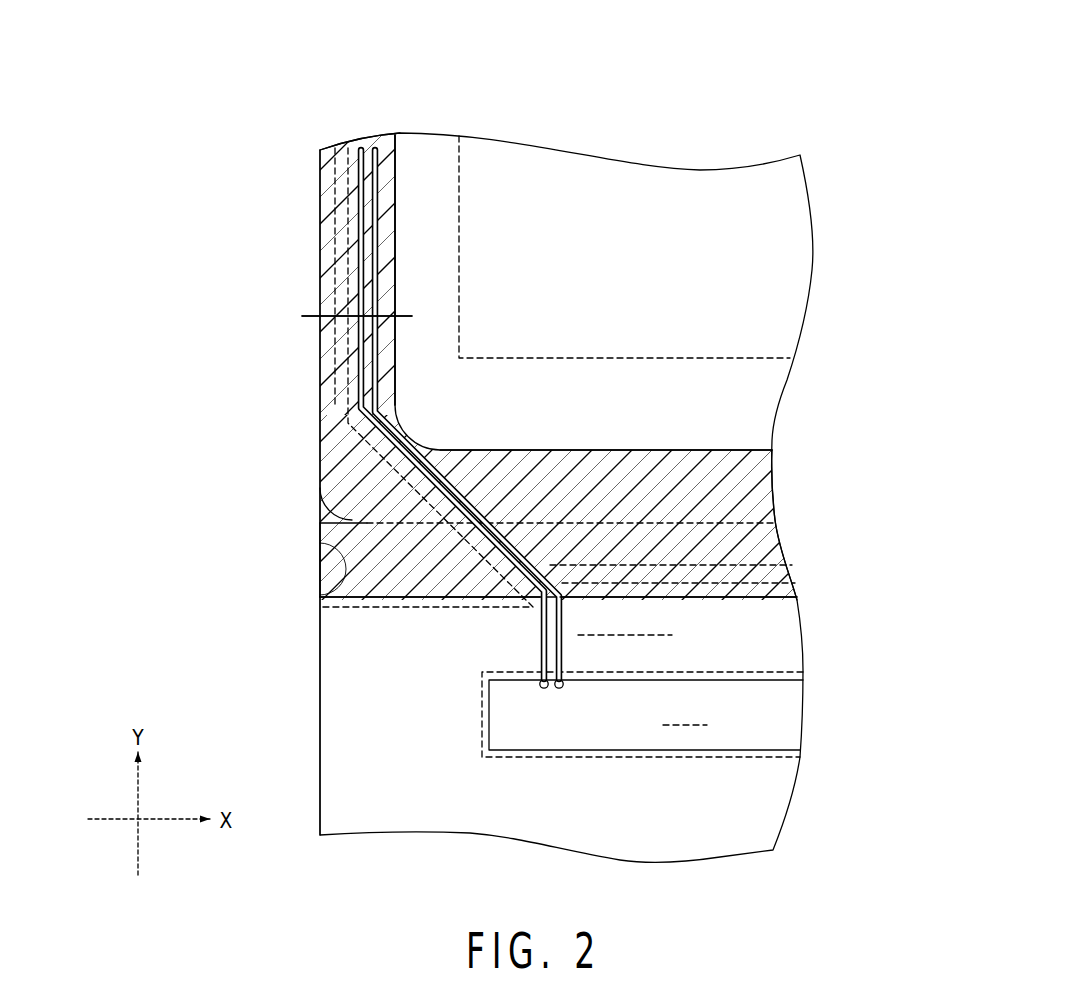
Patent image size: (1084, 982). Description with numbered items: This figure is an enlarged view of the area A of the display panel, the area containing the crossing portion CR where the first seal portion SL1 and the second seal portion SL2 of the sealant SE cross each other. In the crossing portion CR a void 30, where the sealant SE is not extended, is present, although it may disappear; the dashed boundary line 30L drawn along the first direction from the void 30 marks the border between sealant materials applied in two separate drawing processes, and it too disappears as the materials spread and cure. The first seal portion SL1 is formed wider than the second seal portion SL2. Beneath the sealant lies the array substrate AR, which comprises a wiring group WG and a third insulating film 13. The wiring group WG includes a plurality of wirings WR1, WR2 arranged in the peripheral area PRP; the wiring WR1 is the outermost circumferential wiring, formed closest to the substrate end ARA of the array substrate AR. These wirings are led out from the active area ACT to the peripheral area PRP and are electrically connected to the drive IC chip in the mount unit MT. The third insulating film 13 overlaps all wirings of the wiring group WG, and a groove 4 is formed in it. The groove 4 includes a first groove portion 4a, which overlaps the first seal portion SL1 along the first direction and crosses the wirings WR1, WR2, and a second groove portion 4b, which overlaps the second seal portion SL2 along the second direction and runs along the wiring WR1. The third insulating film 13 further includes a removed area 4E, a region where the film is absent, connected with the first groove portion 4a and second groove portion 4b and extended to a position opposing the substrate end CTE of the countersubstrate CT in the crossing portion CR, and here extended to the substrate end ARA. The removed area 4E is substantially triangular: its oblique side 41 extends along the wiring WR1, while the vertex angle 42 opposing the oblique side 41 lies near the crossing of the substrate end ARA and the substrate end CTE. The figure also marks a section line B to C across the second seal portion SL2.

The groove 4 is at (334, 226).
The second groove portion 4b is at (337, 149).
The first groove portion 4a is at (782, 582).
The removed area 4E is at (383, 601).
The void 30 is at (318, 510).
The boundary line 30L is at (762, 525).
The vertex angle 42 is at (318, 544).
The oblique side 41 is at (488, 567).
The third insulating film 13 is at (466, 550).
The wiring group WG is at (503, 415).
The wiring WR1 is at (545, 690).
The wiring WR2 is at (563, 668).
The mount unit MT is at (788, 719).
The active area ACT is at (782, 227).
The peripheral area PRP is at (433, 156).
The first seal portion SL1 is at (724, 448).
The second seal portion SL2 is at (387, 223).
The sealant SE is at (403, 255).
The area A is at (700, 106).
The section line B is at (348, 317).
The section line C is at (367, 317).
The crossing portion CR is at (318, 420).
The countersubstrate CT is at (773, 545).
The substrate end CTE is at (738, 604).
The substrate end ARA is at (318, 578).
The array substrate AR is at (320, 666).